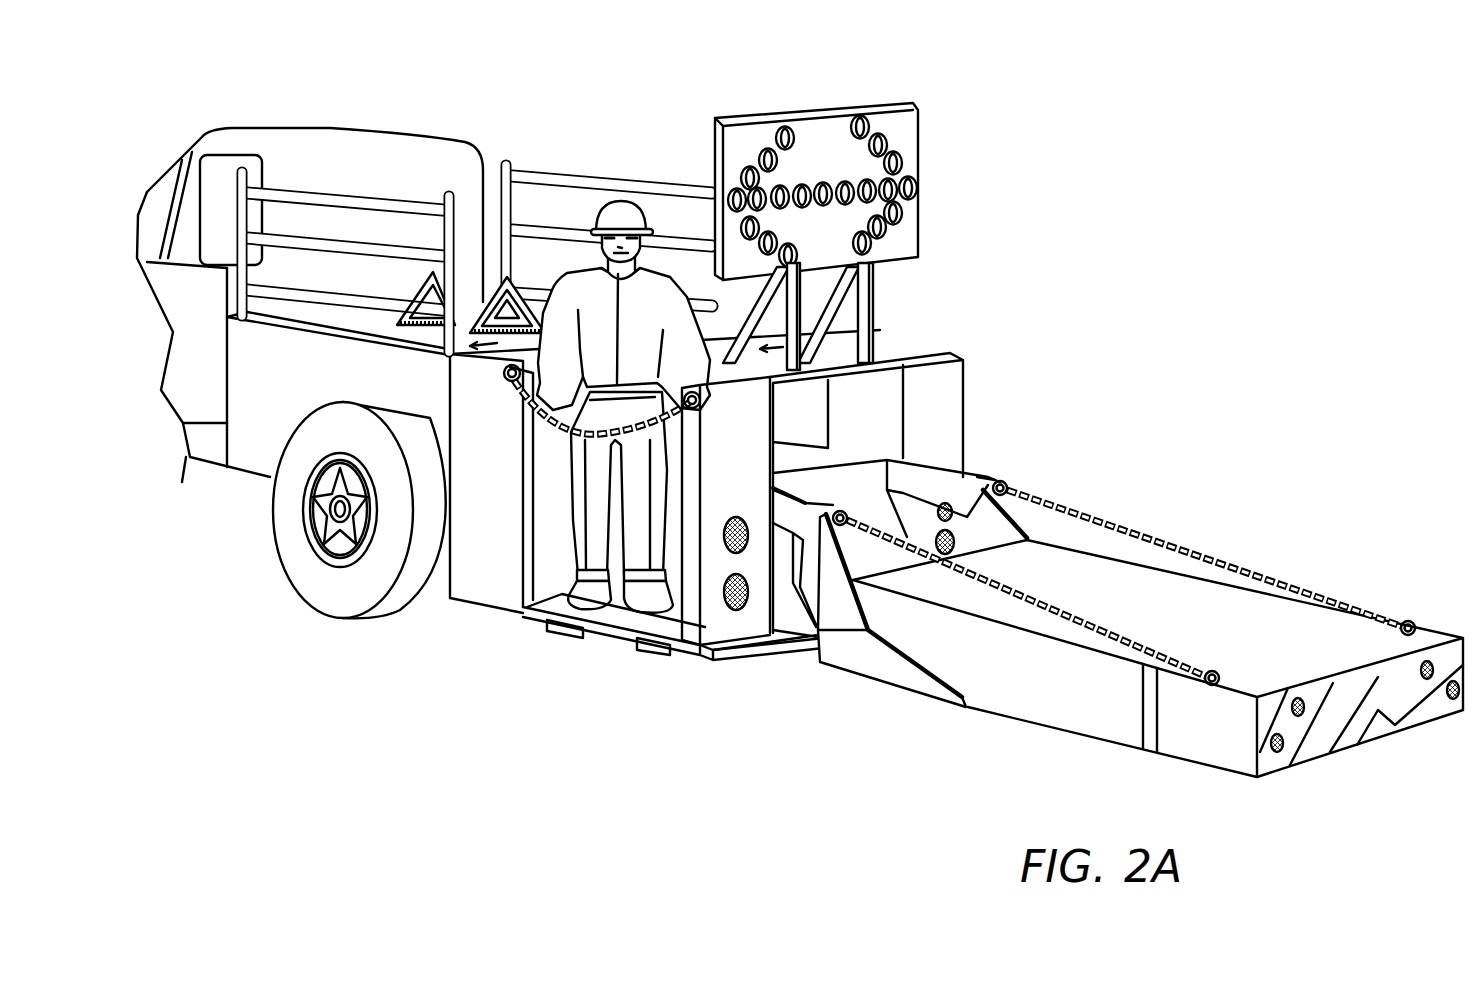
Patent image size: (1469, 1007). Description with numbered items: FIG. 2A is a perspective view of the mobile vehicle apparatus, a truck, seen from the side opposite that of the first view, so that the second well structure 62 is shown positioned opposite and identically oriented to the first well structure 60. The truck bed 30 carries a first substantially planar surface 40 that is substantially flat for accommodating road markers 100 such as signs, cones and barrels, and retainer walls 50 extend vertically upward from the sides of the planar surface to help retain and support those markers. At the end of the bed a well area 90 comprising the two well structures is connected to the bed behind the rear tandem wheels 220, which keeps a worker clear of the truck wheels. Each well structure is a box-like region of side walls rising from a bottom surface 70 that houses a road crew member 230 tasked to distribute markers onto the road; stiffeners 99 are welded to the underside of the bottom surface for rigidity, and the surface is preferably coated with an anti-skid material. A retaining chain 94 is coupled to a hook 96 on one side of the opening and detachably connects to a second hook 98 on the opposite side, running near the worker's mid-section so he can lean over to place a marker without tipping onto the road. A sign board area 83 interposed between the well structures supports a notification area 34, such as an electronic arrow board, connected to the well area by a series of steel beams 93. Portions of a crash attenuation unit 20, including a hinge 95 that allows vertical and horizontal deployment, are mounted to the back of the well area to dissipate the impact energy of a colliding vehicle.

The crash attenuation unit 20 is at (1150, 497).
The bed 30 is at (493, 343).
The notification area 34 is at (812, 142).
The first substantially planar surface 40 is at (331, 322).
The retainer walls 50 is at (413, 207).
The well structure 60 is at (903, 352).
The well structure 62 is at (652, 653).
The bottom surface 70 is at (620, 609).
The sign board area 83 is at (918, 263).
The well area 90 is at (797, 663).
The steel beams 93 is at (875, 289).
The chain 94 is at (590, 430).
The hinge 95 is at (893, 667).
The hook 96 is at (502, 380).
The second hook 98 is at (700, 403).
The stiffeners 99 is at (557, 641).
The markers 100 is at (513, 290).
The rear wheels 220 is at (333, 607).
The road crew member 230 is at (622, 202).